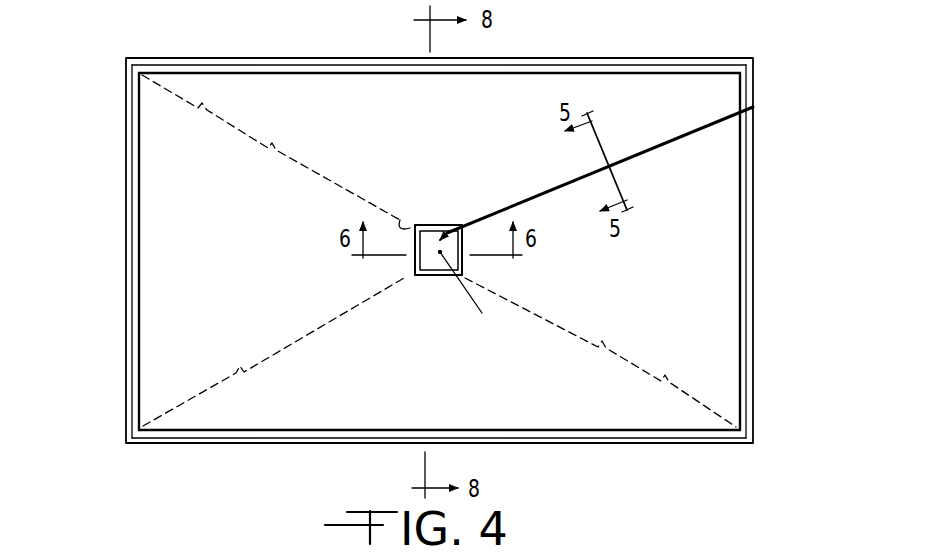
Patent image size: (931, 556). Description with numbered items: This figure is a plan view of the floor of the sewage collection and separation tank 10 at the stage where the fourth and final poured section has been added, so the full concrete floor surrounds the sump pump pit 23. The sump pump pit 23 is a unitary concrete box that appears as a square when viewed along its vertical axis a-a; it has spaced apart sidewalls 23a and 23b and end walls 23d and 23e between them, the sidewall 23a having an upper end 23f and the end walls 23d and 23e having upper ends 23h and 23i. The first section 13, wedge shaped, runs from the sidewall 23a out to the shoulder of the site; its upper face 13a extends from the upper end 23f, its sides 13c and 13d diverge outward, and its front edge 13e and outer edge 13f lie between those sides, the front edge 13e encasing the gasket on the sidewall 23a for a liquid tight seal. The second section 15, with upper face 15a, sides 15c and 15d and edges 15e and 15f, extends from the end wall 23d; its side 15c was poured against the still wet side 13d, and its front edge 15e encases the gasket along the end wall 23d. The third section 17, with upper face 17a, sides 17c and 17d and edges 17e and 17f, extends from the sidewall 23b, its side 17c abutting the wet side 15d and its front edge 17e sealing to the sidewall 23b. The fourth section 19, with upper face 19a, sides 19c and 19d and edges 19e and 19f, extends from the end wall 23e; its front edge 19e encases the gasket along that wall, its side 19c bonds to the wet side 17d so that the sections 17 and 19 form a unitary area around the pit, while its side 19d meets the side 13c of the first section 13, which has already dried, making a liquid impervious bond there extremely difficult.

The sewage collection and separation tank 10 is at (240, 42).
The first section 13 is at (708, 343).
The upper face 13a is at (708, 228).
The side 13c is at (702, 130).
The side 13d is at (602, 347).
The front edge 13e is at (463, 268).
The edge 13f is at (757, 308).
The second section 15 is at (633, 413).
The upper face 15a is at (513, 412).
The side 15c is at (665, 382).
The side 15d is at (240, 372).
The front edge 15e is at (440, 276).
The edge 15f is at (332, 430).
The third section 17 is at (153, 296).
The upper face 17a is at (160, 351).
The side 17c is at (208, 378).
The side 17d is at (270, 147).
The front edge 17e is at (410, 223).
The edge 17f is at (139, 243).
The fourth section 19 is at (465, 88).
The upper face 19a is at (566, 90).
The side 19c is at (205, 105).
The side 19d is at (655, 142).
The front edge 19e is at (437, 225).
The edge 19f is at (364, 73).
The sump pump pit 23 is at (448, 224).
The sidewall 23a is at (463, 258).
The sidewall 23b is at (415, 255).
The end wall 23d is at (450, 276).
The end wall 23e is at (458, 218).
The upper end 23f is at (518, 211).
The upper end 23h is at (422, 276).
The upper end 23i is at (420, 225).
The vertical axis a-a is at (472, 296).